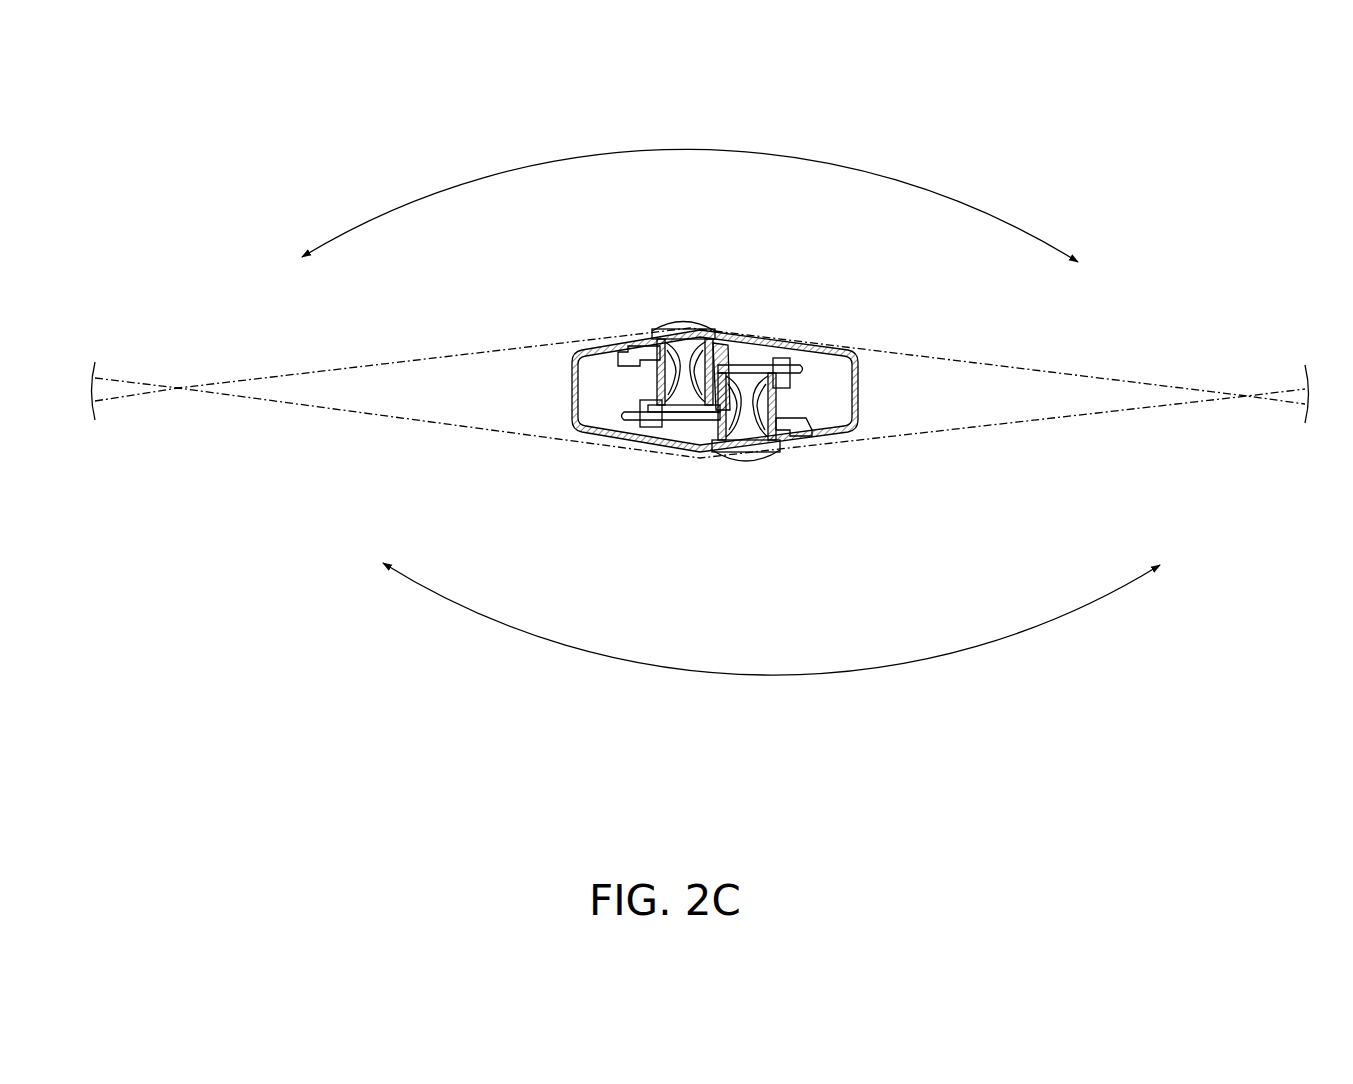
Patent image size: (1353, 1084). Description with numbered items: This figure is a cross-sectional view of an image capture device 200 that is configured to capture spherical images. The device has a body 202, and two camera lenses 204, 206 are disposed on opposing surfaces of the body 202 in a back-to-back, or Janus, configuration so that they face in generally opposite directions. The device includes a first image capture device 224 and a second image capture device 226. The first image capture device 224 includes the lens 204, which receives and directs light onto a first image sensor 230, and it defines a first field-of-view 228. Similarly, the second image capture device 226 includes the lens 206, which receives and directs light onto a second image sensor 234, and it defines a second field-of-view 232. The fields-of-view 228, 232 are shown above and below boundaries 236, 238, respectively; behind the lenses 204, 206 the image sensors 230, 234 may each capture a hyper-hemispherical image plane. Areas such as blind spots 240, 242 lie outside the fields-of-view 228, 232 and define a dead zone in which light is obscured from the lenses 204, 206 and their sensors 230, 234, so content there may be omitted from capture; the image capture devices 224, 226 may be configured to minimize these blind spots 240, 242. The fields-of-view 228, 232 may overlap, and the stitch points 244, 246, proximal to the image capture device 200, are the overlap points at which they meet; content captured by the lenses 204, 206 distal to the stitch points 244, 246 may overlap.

The image capture device 200 is at (1125, 315).
The body 202 is at (568, 403).
The lens 204 is at (680, 320).
The lens 206 is at (750, 467).
The first image capture device 224 is at (718, 318).
The second image capture device 226 is at (770, 473).
The first field-of-view 228 is at (760, 150).
The first image sensor 230 is at (678, 418).
The second field-of-view 232 is at (722, 673).
The second image sensor 234 is at (755, 365).
The boundary 236 is at (378, 363).
The boundary 238 is at (420, 415).
The blind spot 240 is at (487, 378).
The blind spot 242 is at (918, 370).
The stitch point 244 is at (178, 392).
The stitch point 246 is at (1247, 398).